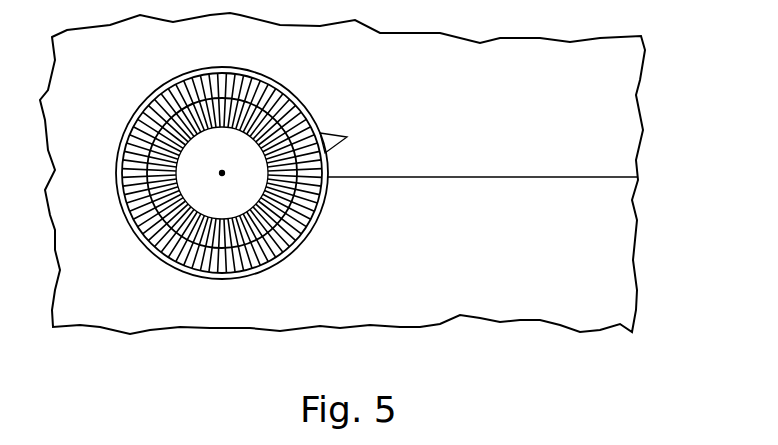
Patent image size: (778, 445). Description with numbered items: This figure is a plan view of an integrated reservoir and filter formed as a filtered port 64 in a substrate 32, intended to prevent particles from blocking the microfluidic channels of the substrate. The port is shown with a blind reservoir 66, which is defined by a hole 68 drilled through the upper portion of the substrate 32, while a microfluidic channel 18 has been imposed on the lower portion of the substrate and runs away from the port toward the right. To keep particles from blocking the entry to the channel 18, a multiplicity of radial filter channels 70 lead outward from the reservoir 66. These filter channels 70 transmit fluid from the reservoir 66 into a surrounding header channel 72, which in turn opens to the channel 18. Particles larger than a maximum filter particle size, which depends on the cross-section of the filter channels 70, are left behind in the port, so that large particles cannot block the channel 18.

The microfluidic channel 18 is at (581, 196).
The substrate 32 is at (630, 117).
The filtered port 64 is at (522, 83).
The blind reservoir 66 is at (233, 189).
The hole 68 is at (287, 237).
The radial filter channels 70 is at (347, 137).
The header channel 72 is at (313, 95).